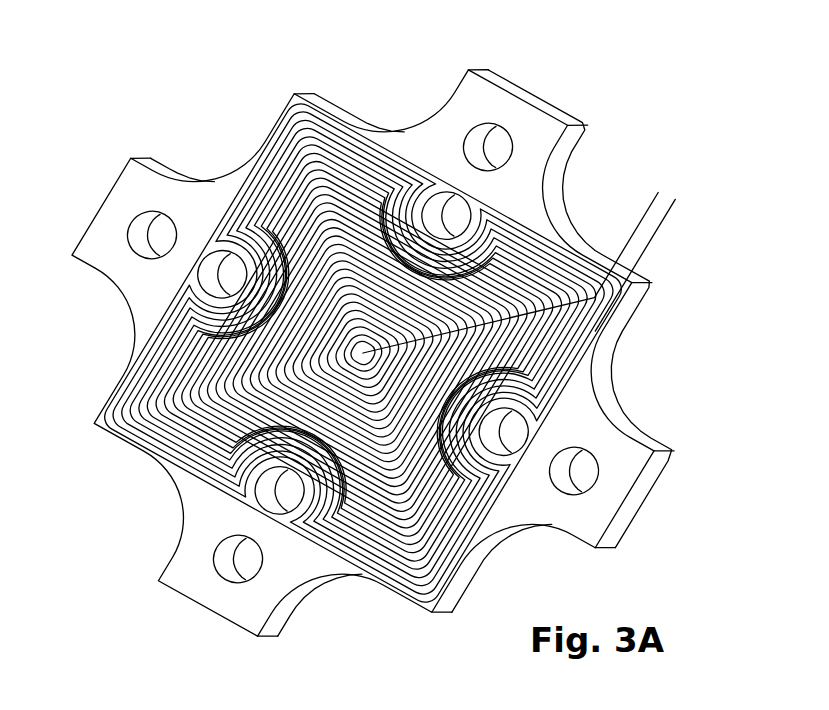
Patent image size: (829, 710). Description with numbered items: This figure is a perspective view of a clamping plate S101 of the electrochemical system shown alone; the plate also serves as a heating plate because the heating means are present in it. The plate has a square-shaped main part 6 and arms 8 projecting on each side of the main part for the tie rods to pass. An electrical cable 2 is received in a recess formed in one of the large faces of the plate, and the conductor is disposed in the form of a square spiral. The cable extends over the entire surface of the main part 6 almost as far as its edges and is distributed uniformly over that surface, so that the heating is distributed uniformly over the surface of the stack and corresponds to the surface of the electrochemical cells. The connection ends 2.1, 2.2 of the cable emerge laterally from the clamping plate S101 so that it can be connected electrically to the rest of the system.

The clamping plate S101 is at (222, 114).
The electrical cable 2 is at (332, 162).
The connection end 2.1 is at (635, 192).
The connection end 2.2 is at (660, 235).
The main part 6 is at (483, 222).
The arms 8 is at (488, 104).